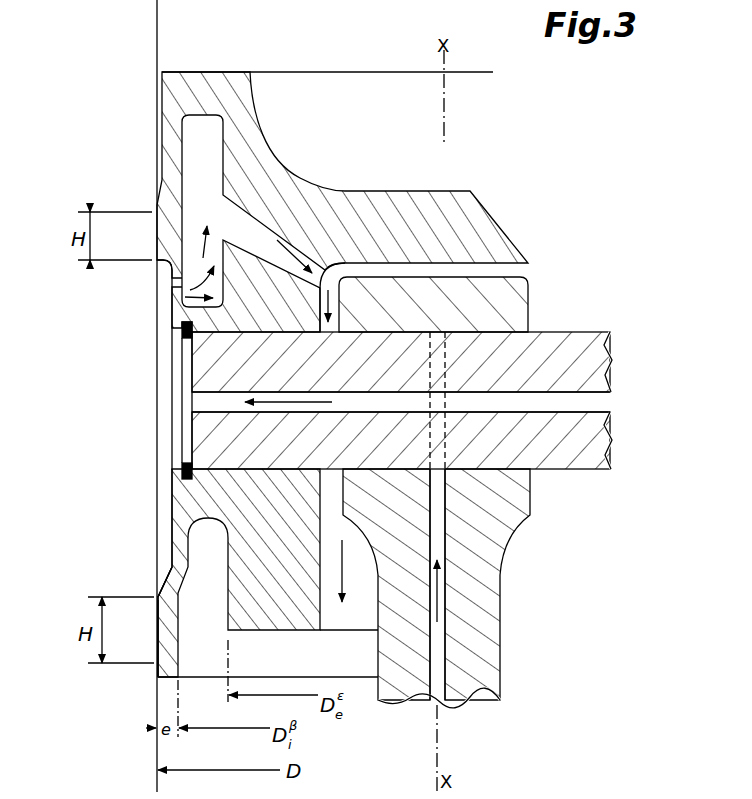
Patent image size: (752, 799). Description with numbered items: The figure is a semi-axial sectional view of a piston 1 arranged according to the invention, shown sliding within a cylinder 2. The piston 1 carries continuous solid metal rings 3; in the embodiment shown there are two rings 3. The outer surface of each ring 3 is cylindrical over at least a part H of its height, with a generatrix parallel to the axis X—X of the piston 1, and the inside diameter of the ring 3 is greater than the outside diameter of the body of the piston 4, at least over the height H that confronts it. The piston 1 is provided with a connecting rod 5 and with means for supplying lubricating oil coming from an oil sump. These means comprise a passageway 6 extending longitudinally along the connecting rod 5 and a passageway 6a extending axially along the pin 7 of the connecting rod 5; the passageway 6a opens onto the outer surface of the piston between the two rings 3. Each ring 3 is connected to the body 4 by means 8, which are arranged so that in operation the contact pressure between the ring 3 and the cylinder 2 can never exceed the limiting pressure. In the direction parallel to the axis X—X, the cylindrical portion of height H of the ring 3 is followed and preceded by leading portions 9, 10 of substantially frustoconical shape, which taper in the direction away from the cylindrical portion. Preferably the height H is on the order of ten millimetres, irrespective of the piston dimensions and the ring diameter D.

The piston 1 is at (364, 70).
The cylinder 2 is at (137, 50).
The continuous solid metal ring 3 is at (160, 233).
The body of the piston 4 is at (291, 622).
The connecting rod 5 is at (483, 640).
The passageway 6 is at (438, 672).
The passageway 6a is at (513, 405).
The pin 7 is at (587, 352).
The connecting means 8 is at (157, 562).
The leading portion 9 is at (158, 672).
The leading portion 10 is at (161, 577).